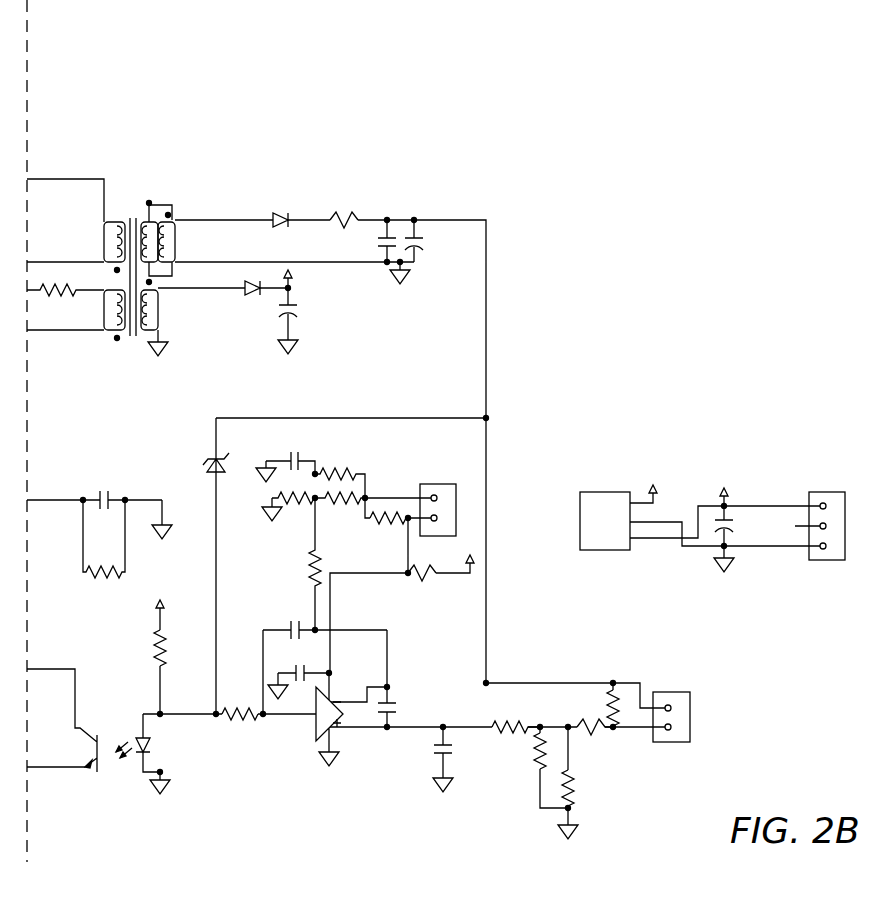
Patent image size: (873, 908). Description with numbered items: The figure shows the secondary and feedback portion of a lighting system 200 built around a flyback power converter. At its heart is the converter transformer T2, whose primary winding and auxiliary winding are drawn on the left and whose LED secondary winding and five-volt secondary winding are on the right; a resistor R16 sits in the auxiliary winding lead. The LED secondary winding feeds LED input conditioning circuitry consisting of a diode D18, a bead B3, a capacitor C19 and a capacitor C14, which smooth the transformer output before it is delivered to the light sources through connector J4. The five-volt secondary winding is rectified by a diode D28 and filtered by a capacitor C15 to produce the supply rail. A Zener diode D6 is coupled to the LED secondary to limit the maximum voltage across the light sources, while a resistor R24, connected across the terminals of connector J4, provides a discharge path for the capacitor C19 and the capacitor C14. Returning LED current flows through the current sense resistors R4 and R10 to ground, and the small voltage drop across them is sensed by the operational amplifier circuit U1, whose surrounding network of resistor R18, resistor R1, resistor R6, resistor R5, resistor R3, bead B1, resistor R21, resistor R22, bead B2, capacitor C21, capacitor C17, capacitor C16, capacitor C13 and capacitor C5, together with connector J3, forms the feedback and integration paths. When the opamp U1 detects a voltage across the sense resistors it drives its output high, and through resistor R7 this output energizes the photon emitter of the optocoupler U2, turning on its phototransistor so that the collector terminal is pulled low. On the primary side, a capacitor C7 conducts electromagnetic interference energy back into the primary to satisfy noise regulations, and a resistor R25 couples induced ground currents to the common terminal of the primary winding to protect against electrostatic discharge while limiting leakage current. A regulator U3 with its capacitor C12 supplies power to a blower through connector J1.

The lighting system 200 is at (543, 121).
The converter transformer T2 is at (163, 263).
The resistor R16 is at (65, 281).
The diode D18 is at (280, 211).
The ferrite bead B3 is at (341, 231).
The capacitor C19 is at (380, 228).
The capacitor C14 is at (421, 228).
The diode D28 is at (231, 281).
The capacitor C15 is at (271, 321).
The capacitor C7 is at (104, 489).
The resistor R25 is at (103, 549).
The Zener diode D6 is at (211, 566).
The capacitor C21 is at (285, 456).
The resistor R18 is at (340, 474).
The resistor R1 is at (288, 497).
The resistor R6 is at (340, 509).
The resistor R5 is at (389, 528).
The connector J3 is at (438, 500).
The resistor R3 is at (302, 564).
The ferrite bead B1 is at (424, 565).
The resistor R7 is at (147, 648).
The optocoupler U2 is at (88, 720).
The resistor R21 is at (240, 702).
The capacitor C17 is at (292, 616).
The capacitor C16 is at (296, 671).
The operational amplifier circuit U1 is at (322, 725).
The capacitor C13 is at (406, 707).
The capacitor C5 is at (455, 759).
The resistor R22 is at (515, 713).
The resistor R24 is at (594, 708).
The ferrite bead B2 is at (597, 737).
The current sense resistor R10 is at (523, 752).
The current sense resistor R4 is at (579, 801).
The connector J4 is at (674, 719).
The voltage regulator U3 is at (611, 510).
The capacitor C12 is at (741, 539).
The blower connector J1 is at (829, 529).